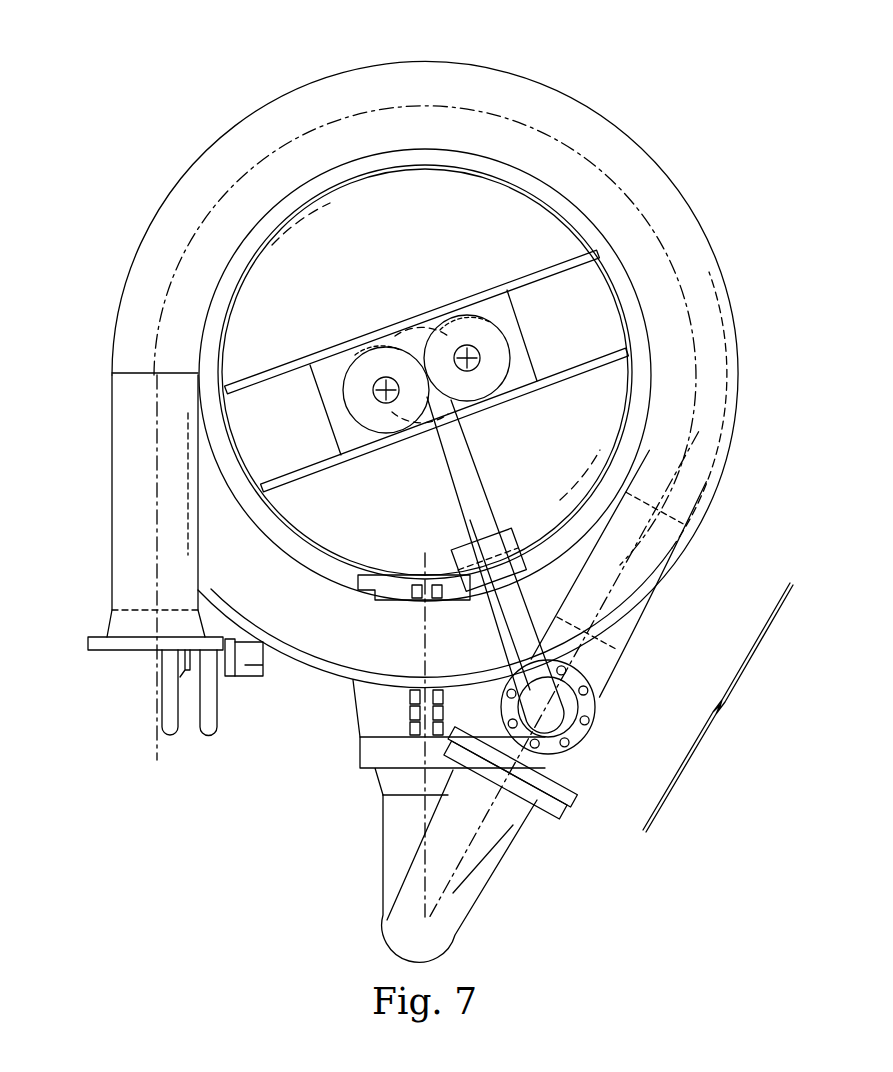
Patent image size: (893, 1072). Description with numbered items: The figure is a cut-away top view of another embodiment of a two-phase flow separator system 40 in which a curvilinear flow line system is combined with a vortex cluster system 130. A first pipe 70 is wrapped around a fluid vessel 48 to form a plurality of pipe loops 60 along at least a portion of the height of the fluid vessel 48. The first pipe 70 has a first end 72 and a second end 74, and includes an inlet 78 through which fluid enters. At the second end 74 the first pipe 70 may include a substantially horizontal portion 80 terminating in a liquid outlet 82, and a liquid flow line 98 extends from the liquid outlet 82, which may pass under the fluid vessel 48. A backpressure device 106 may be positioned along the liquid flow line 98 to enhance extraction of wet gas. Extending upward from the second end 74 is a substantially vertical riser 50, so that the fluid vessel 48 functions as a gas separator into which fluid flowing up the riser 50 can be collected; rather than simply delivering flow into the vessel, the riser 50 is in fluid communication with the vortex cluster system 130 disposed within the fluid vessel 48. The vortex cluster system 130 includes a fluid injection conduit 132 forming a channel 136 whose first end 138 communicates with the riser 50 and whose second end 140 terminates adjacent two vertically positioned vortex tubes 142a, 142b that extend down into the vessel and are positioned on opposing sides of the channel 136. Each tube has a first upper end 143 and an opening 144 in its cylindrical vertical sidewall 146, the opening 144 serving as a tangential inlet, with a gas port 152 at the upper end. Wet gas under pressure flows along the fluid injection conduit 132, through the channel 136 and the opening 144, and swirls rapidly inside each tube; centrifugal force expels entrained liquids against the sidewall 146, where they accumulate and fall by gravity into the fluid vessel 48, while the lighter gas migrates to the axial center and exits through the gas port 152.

The two-phase flow separator system 40 is at (607, 86).
The fluid vessel 48 is at (340, 178).
The riser 50 is at (583, 725).
The pipe loops 60 is at (683, 193).
The first pipe 70 is at (212, 140).
The first end 72 is at (112, 597).
The second end 74 is at (653, 607).
The inlet 78 is at (130, 652).
The substantially horizontal portion 80 is at (720, 706).
The liquid outlet 82 is at (560, 807).
The liquid flow line 98 is at (475, 840).
The backpressure device 106 is at (353, 727).
The vortex cluster system 130 is at (430, 280).
The fluid injection conduit 132 is at (443, 527).
The channel 136 is at (493, 490).
The first end 138 is at (497, 640).
The second end 140 is at (450, 425).
The vortex tube 142a is at (333, 380).
The vortex tube 142b is at (510, 373).
The first upper end 143 is at (355, 373).
The opening 144 is at (410, 332).
The cylindrical vertical sidewall 146 is at (355, 368).
The gas port 152 is at (343, 420).